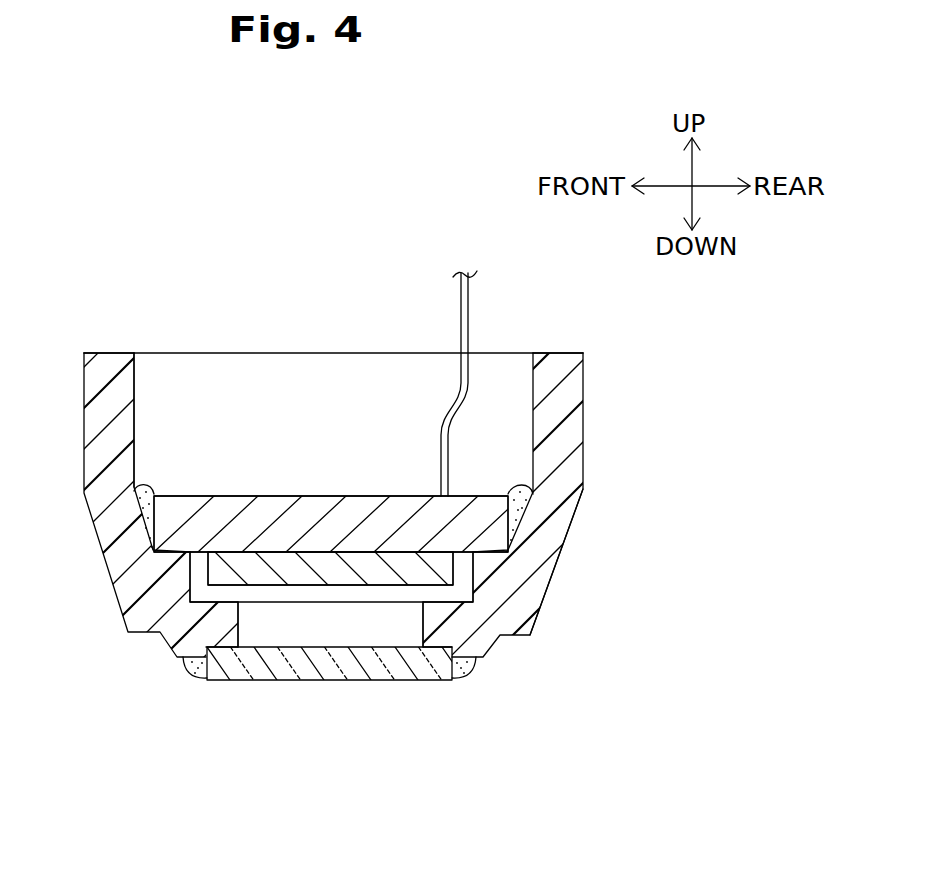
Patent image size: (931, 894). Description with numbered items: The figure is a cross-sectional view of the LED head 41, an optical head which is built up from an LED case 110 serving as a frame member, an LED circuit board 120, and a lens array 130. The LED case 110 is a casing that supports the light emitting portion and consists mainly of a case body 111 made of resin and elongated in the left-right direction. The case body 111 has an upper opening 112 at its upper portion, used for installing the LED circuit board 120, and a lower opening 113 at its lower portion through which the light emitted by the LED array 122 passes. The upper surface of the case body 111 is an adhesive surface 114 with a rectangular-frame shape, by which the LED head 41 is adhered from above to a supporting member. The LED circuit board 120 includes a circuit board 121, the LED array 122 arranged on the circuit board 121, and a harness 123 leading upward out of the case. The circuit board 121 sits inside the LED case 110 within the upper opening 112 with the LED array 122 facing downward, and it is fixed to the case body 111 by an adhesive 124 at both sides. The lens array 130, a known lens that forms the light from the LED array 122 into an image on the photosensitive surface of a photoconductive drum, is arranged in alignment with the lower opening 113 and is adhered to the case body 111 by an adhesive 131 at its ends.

The LED head 41 is at (125, 228).
The LED case 110 is at (590, 408).
The case body 111 is at (548, 542).
The upper opening 112 is at (137, 387).
The lower opening 113 is at (238, 625).
The adhesive surface 114 is at (107, 353).
The LED circuit board 120 is at (373, 492).
The circuit board 121 is at (258, 510).
The LED array 122 is at (308, 570).
The harness 123 is at (470, 316).
The adhesive 124 is at (147, 490).
The lens array 130 is at (367, 690).
The adhesive 131 is at (198, 670).